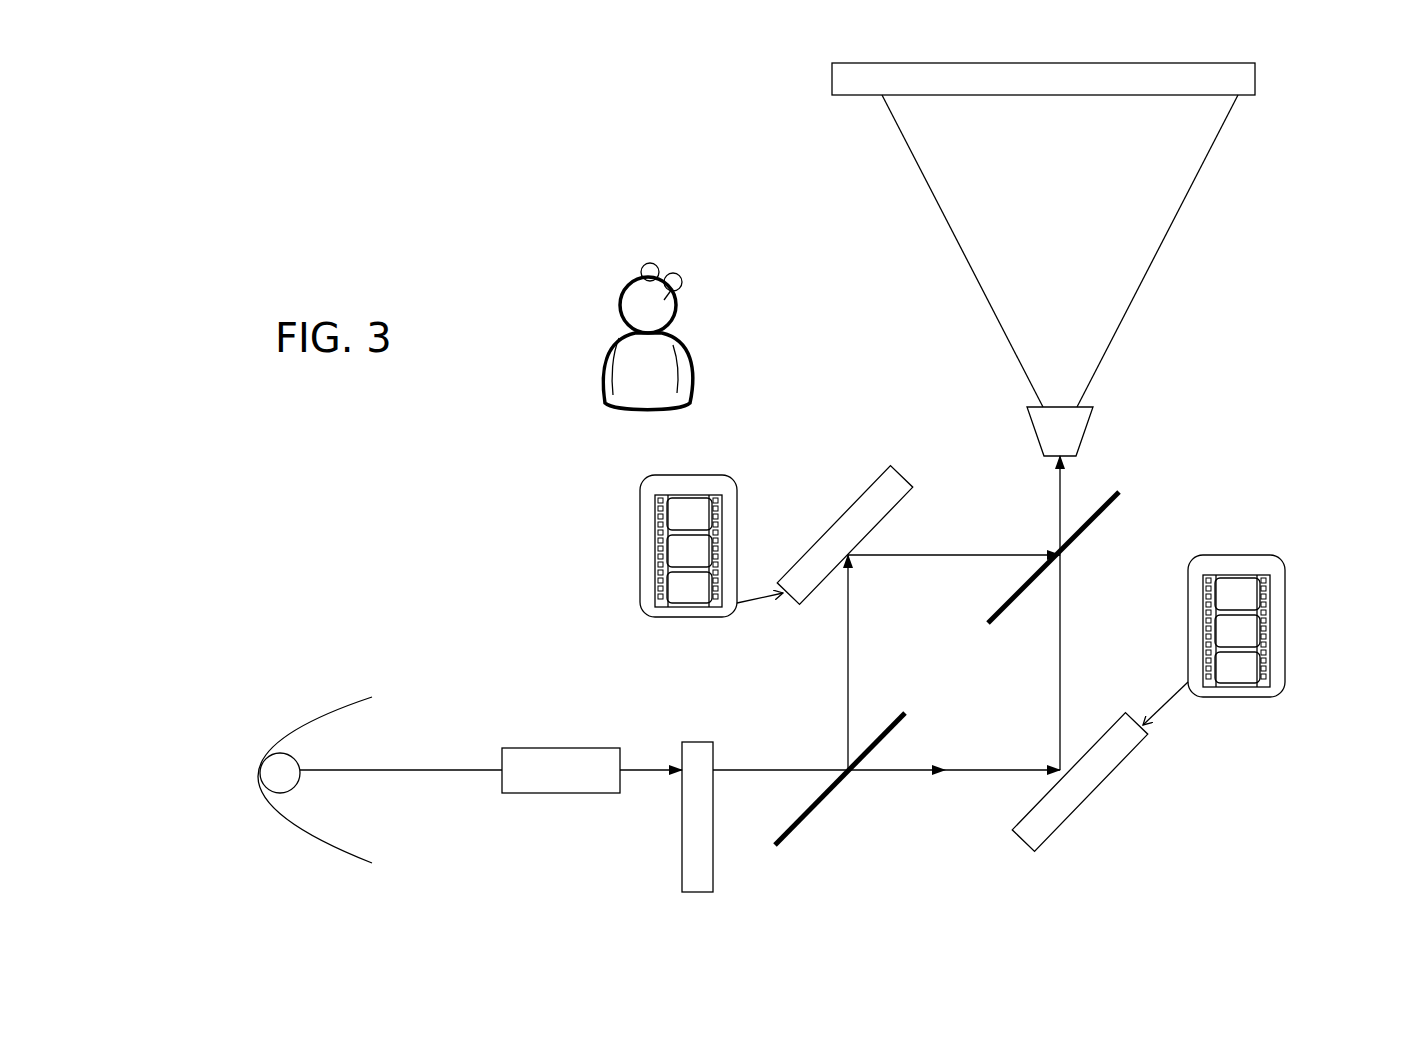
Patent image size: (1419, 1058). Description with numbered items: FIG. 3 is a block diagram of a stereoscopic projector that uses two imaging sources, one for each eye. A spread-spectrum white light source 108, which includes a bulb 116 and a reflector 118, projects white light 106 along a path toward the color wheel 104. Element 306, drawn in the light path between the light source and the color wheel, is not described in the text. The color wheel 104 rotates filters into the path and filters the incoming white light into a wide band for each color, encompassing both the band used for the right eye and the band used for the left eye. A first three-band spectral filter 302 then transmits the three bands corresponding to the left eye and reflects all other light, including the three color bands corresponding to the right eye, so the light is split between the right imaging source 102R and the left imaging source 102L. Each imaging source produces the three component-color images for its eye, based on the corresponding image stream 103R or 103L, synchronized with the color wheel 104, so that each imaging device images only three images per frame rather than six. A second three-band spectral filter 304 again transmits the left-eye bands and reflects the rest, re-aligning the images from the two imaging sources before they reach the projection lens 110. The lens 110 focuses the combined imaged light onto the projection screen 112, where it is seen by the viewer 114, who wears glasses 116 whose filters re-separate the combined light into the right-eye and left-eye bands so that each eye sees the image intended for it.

The imaging source 102L is at (1102, 803).
The imaging source 102R is at (830, 523).
The image stream 103L is at (1285, 657).
The image stream 103R is at (638, 577).
The color wheel 104 is at (717, 873).
The light 106 is at (413, 763).
The light source 108 is at (318, 736).
The projection lens 110 is at (1078, 425).
The projection screen 112 is at (1030, 95).
The viewer 114 is at (647, 361).
The bulb 116 is at (643, 260).
The reflector 118 is at (367, 692).
The three-band spectral filter 302 is at (818, 813).
The three-band spectral filter 304 is at (1085, 538).
The polarizer 306 is at (557, 793).